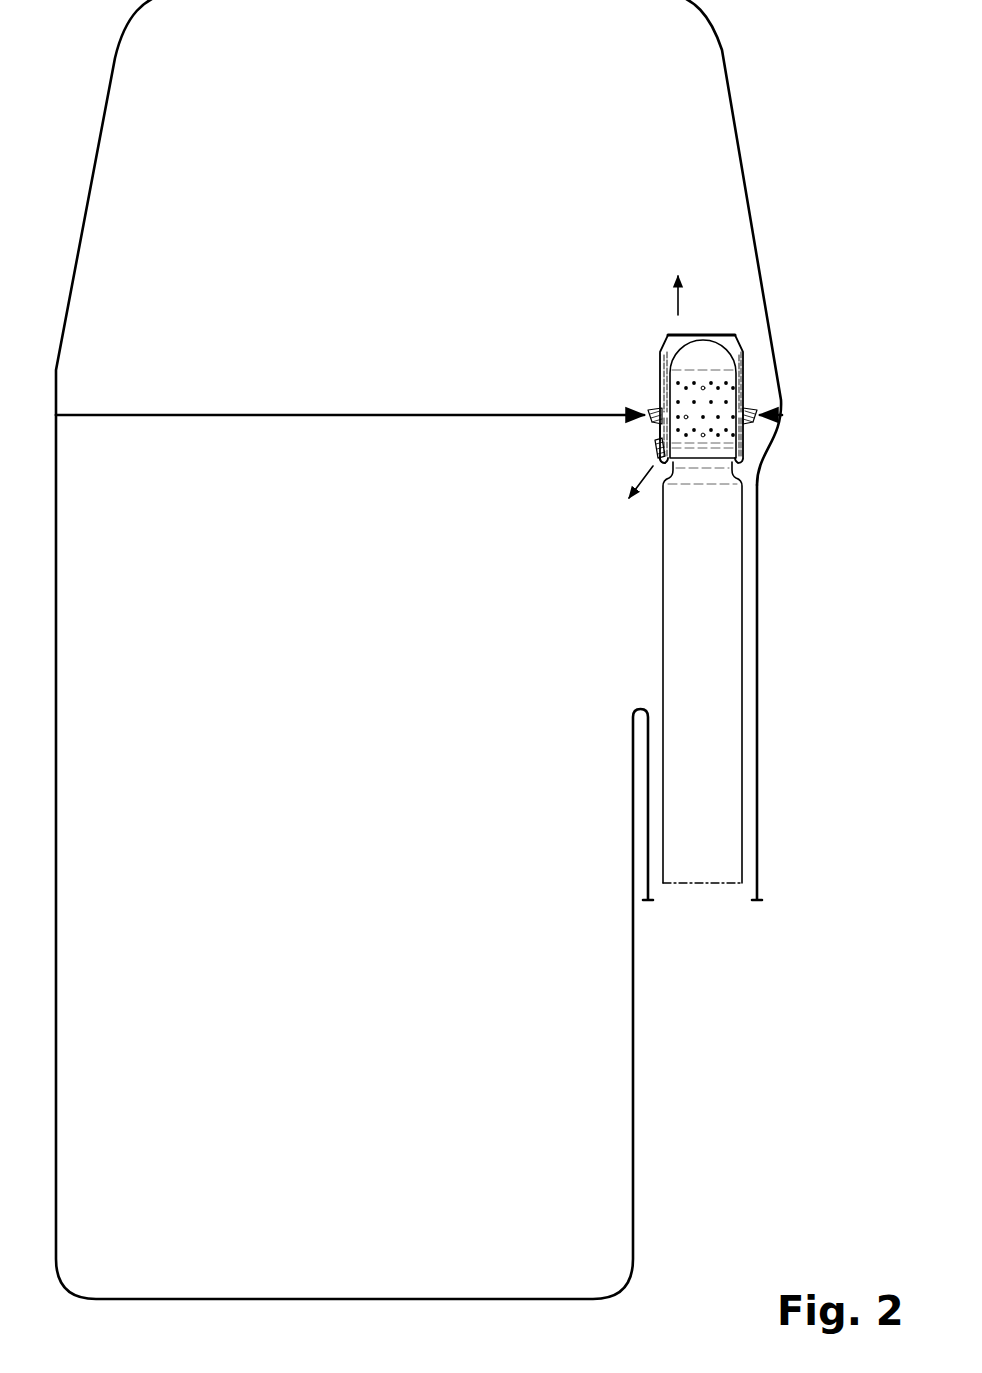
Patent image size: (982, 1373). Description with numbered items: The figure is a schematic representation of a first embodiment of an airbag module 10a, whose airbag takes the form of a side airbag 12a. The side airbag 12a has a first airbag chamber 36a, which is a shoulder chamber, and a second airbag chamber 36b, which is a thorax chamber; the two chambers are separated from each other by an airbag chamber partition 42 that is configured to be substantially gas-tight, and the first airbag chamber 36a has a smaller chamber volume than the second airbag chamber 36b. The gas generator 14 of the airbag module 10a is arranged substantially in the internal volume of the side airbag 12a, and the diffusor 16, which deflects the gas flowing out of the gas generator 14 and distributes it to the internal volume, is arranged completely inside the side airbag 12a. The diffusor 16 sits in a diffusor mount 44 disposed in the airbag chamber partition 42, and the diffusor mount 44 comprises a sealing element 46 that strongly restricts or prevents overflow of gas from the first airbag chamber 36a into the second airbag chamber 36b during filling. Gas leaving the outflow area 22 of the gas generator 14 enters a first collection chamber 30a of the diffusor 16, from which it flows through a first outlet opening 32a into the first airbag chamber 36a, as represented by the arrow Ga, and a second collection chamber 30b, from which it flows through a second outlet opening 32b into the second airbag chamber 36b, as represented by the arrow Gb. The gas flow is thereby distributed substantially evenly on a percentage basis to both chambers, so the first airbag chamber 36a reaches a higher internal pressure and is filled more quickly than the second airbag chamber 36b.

The airbag module 10a is at (814, 860).
The side airbag 12a is at (784, 322).
The gas generator 14 is at (757, 700).
The diffusor 16 is at (710, 328).
The outflow area 22 is at (727, 395).
The first collection chamber 30a is at (742, 383).
The second collection chamber 30b is at (741, 433).
The first outlet opening 32a is at (723, 337).
The second outlet opening 32b is at (657, 462).
The first airbag chamber 36a is at (443, 130).
The second airbag chamber 36b is at (365, 775).
The airbag chamber partition 42 is at (508, 413).
The diffusor mount 44 is at (650, 427).
The sealing element 46 is at (652, 413).
The arrow Ga is at (674, 298).
The arrow Gb is at (647, 490).